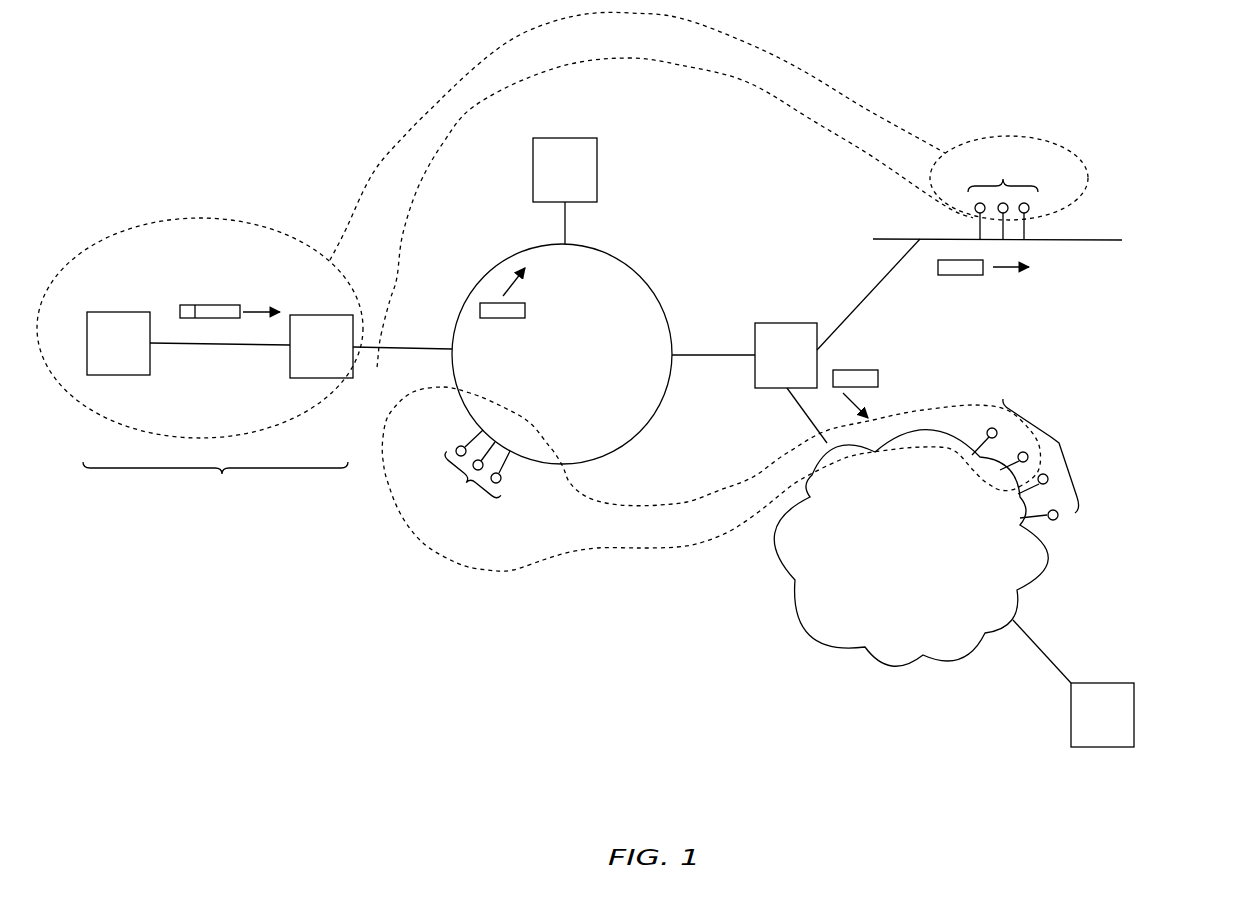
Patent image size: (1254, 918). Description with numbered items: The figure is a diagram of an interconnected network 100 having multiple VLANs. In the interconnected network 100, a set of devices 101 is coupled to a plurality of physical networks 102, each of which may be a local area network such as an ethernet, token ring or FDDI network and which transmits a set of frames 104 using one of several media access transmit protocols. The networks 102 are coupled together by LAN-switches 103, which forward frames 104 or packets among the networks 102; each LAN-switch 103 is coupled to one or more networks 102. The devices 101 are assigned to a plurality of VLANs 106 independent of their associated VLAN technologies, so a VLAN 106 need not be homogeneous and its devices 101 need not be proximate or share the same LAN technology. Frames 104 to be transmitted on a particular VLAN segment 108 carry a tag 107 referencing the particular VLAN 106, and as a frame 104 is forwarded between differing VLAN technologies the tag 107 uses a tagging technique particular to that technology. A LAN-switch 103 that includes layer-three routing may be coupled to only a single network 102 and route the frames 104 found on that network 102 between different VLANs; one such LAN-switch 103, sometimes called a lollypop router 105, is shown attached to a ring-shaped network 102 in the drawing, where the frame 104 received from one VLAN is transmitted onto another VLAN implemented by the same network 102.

The interconnected network 100 is at (1192, 162).
The devices 101 is at (764, 311).
The physical network 102 is at (636, 436).
The LAN-switch 103 is at (788, 323).
The frame 104 is at (213, 303).
The lollypop router 105 is at (597, 162).
The VLAN 106 is at (402, 144).
The tag 107 is at (188, 304).
The VLAN segment 108 is at (244, 378).